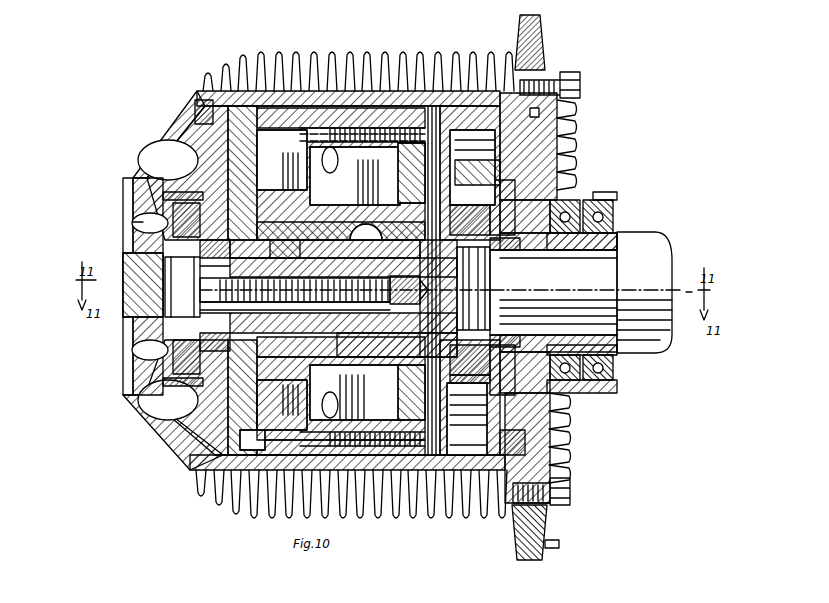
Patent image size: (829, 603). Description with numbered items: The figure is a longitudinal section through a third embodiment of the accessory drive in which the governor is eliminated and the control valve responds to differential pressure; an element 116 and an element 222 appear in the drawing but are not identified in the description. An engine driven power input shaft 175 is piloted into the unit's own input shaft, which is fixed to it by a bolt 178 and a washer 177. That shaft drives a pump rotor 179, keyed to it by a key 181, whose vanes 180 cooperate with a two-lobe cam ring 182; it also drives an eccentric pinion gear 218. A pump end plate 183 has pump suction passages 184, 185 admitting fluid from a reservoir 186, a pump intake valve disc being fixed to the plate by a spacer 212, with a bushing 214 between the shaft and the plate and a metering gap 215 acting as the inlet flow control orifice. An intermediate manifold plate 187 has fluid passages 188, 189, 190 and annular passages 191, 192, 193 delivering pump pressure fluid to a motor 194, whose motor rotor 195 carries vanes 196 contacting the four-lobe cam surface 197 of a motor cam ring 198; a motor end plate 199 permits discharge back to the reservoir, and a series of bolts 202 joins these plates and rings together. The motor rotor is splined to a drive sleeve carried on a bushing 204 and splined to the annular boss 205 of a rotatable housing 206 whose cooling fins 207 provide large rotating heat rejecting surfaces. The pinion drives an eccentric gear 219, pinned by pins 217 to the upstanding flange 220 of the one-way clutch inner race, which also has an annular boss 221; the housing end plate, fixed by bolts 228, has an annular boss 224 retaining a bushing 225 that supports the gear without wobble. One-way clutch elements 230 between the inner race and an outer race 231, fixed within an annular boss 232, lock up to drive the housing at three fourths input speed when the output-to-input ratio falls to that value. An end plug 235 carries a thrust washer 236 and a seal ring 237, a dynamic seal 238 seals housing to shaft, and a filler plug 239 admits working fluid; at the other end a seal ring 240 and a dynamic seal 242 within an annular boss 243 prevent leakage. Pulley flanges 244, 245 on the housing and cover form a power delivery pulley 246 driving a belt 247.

The output shaft 116 is at (583, 300).
The engine driven power input shaft 175 is at (662, 248).
The washer 177 is at (290, 266).
The bolt 178 is at (290, 290).
The pump rotor 179 is at (357, 241).
The vanes 180 is at (370, 170).
The key 181 is at (342, 146).
The two-lobe cam ring 182 is at (404, 496).
The pump end plate 183 is at (397, 392).
The pump suction passage 184 is at (377, 182).
The pump suction passage 185 is at (412, 173).
The reservoir 186 is at (416, 92).
The intermediate manifold plate 187 is at (325, 249).
The fluid passage 188 is at (362, 402).
The fluid passage 189 is at (380, 364).
The fluid passage 190 is at (341, 348).
The annular passage 191 is at (320, 438).
The annular passage 192 is at (322, 148).
The annular passage 193 is at (340, 228).
The motor 194 is at (229, 418).
The motor rotor 195 is at (282, 405).
The vanes 196 is at (266, 168).
The four-lobe cam surface 197 is at (282, 142).
The motor cam ring 198 is at (265, 486).
The motor end plate 199 is at (237, 151).
The bolts 202 is at (242, 442).
The bushing 204 is at (272, 262).
The annular boss 205 is at (228, 186).
The rotatable housing 206 is at (350, 89).
The cooling fins 207 is at (295, 66).
The spacer 212 is at (465, 118).
The bushing 214 is at (452, 244).
The metering gap 215 is at (455, 520).
The pins 217 is at (481, 214).
The eccentric pinion gear 218 is at (470, 365).
The eccentric gear 219 is at (498, 240).
The upstanding flange 220 is at (561, 129).
The annular boss 221 is at (578, 120).
The valve 222 is at (498, 130).
The annular boss 224 is at (528, 70).
The bushing 225 is at (507, 494).
The bolts 228 is at (570, 74).
The one-way clutch elements 230 is at (573, 182).
The outer race 231 is at (572, 163).
The annular boss 232 is at (550, 442).
The end plug 235 is at (138, 340).
The thrust washer 236 is at (138, 244).
The seal ring 237 is at (124, 183).
The dynamic seal 238 is at (175, 370).
The filler plug 239 is at (200, 115).
The seal ring 240 is at (538, 110).
The dynamic seal 242 is at (593, 236).
The annular boss 243 is at (618, 193).
The pulley flange 244 is at (520, 545).
The pulley flange 245 is at (560, 540).
The power delivery pulley 246 is at (564, 514).
The belt 247 is at (555, 236).